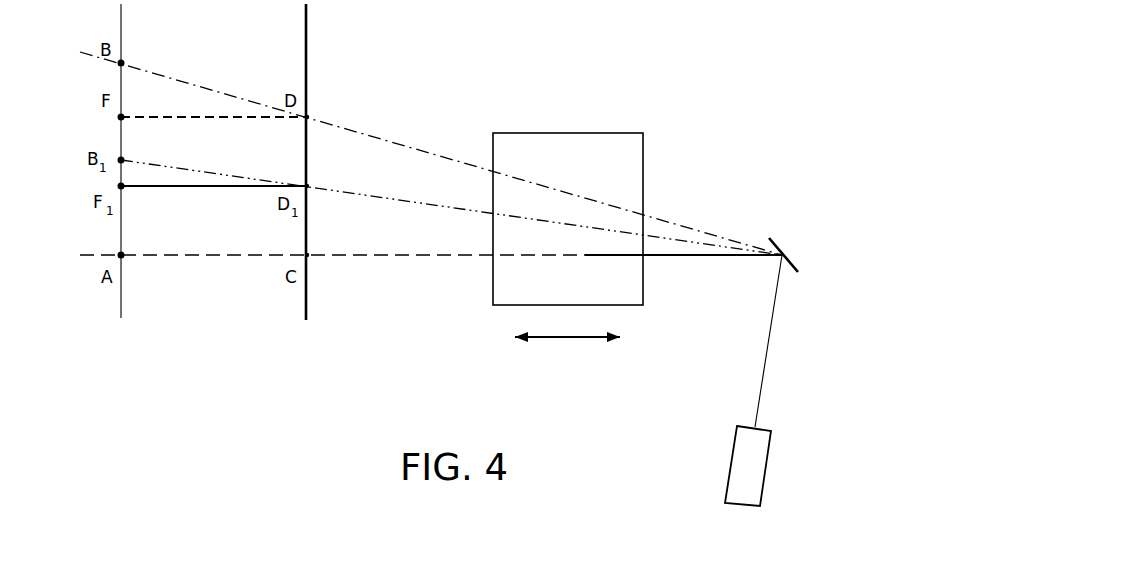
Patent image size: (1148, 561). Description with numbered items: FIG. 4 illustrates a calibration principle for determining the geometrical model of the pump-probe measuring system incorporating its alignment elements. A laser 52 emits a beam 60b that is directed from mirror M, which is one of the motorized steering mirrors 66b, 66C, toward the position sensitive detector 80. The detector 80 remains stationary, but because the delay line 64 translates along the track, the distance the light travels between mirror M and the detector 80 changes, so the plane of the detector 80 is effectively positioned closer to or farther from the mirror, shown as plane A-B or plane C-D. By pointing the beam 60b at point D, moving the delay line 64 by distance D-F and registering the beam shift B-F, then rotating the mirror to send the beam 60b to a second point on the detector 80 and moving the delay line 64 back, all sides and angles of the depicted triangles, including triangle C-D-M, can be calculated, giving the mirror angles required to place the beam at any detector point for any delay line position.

The position sensitive detector 80 is at (122, 15).
The beam 60b is at (431, 152).
The optical delay line 64 is at (657, 158).
The steering mirror 66b is at (825, 286).
The steering mirror 66C is at (825, 286).
The laser 52 is at (761, 496).